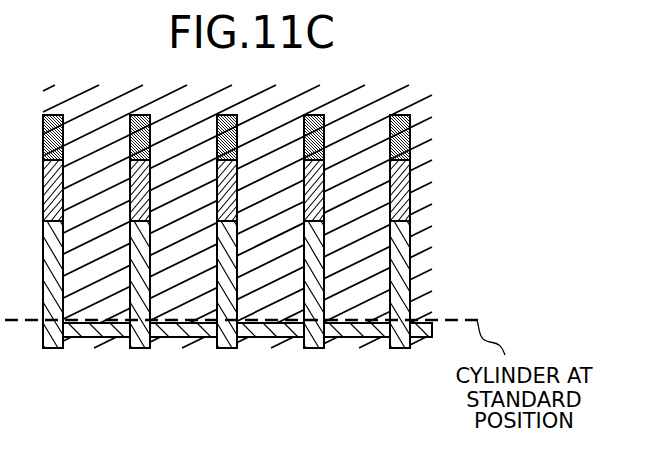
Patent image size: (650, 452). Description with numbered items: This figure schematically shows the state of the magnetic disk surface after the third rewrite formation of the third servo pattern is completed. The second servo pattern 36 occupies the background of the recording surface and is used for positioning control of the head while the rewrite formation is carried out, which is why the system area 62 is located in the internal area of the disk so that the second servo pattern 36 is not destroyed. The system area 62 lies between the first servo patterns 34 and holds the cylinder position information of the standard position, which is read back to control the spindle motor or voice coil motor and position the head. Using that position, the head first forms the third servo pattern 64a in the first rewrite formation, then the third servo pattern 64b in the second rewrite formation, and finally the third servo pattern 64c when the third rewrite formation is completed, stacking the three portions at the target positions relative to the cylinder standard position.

The second servo pattern 36 is at (417, 85).
The third servo pattern 64c is at (410, 128).
The third servo pattern 64b is at (410, 185).
The third servo pattern 64a is at (410, 270).
The system area 62 is at (232, 343).
The first servo pattern 34 is at (398, 343).